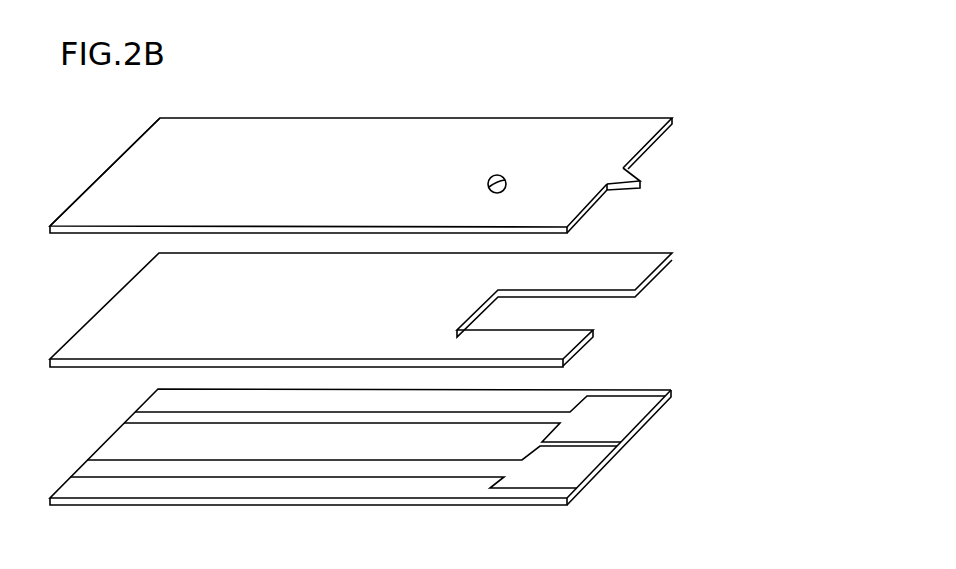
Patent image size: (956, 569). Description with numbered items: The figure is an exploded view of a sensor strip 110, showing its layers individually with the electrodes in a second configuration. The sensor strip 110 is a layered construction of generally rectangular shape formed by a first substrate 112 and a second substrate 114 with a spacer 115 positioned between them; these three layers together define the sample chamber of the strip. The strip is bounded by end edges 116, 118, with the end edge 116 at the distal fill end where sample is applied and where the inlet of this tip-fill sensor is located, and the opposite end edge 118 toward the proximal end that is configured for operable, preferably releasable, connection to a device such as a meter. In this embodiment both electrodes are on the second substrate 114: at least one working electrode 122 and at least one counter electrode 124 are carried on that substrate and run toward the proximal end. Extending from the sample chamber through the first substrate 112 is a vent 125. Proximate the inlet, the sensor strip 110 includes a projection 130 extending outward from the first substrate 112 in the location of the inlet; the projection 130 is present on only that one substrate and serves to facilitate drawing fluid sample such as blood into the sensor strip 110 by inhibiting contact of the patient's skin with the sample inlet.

The sensor strip 110 is at (633, 84).
The first substrate 112 is at (104, 174).
The second substrate 114 is at (100, 447).
The spacer 115 is at (88, 323).
The end edge 116 is at (668, 132).
The end edge 118 is at (134, 143).
The working electrode 122 is at (210, 474).
The counter electrode 124 is at (218, 412).
The vent 125 is at (503, 171).
The projection 130 is at (625, 185).